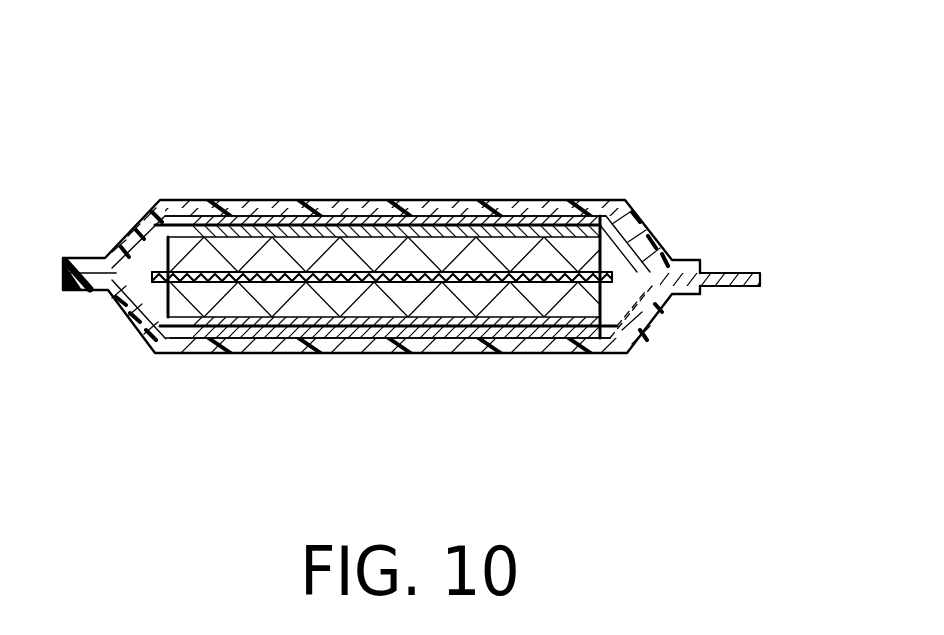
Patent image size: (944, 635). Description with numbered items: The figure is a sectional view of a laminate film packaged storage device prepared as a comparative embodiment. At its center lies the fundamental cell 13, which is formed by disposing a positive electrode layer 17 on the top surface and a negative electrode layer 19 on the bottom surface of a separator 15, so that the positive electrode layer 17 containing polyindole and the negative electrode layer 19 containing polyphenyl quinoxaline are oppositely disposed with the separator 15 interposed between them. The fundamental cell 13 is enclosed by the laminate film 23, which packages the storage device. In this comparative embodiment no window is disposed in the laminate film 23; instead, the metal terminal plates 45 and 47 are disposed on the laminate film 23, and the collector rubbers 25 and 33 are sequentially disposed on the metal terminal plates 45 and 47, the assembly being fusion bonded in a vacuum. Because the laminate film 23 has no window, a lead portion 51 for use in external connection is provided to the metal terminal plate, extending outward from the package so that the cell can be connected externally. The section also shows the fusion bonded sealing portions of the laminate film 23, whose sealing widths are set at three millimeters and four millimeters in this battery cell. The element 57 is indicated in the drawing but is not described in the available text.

The fundamental cell 13 is at (606, 254).
The separator 15 is at (535, 290).
The positive electrode layer 17 is at (515, 248).
The negative electrode layer 19 is at (565, 276).
The laminate film 23 is at (468, 200).
The collector rubber 25 is at (387, 230).
The collector rubber 33 is at (370, 323).
The metal terminal plate 45 is at (313, 216).
The metal terminal plate 47 is at (448, 332).
The lead portion 51 is at (727, 272).
The inner case wall 57 is at (513, 175).